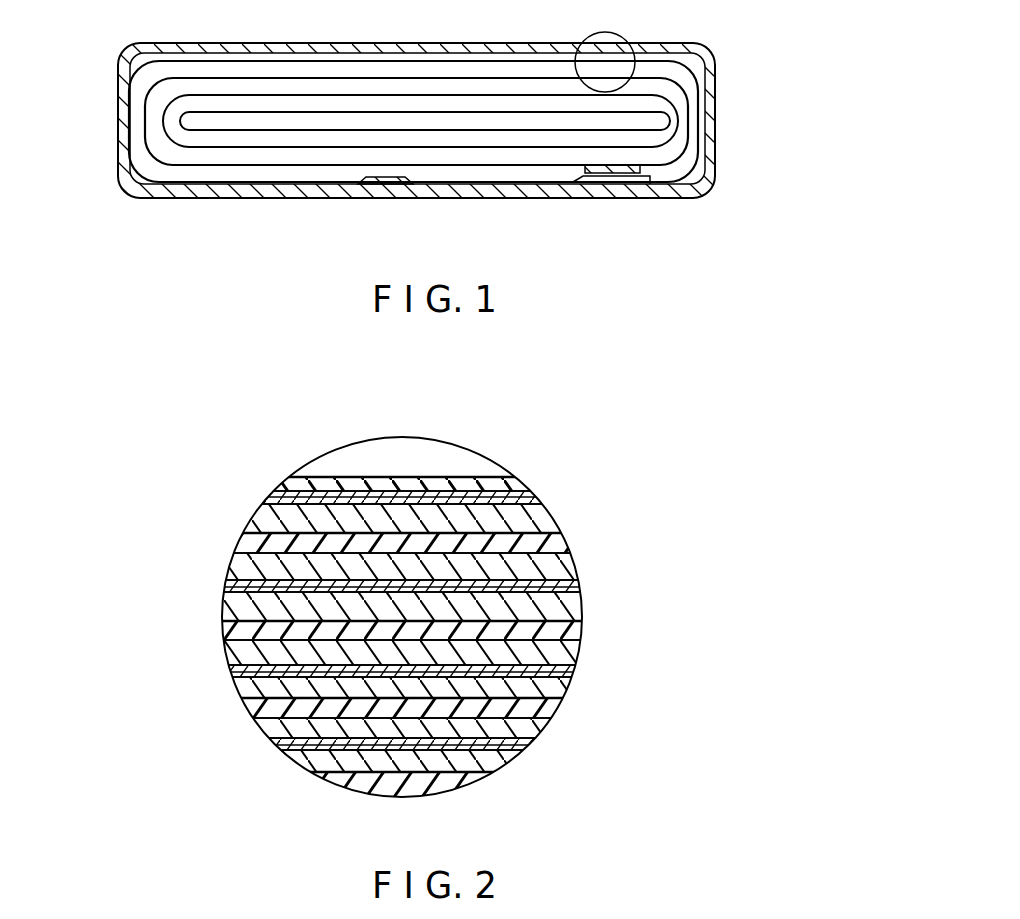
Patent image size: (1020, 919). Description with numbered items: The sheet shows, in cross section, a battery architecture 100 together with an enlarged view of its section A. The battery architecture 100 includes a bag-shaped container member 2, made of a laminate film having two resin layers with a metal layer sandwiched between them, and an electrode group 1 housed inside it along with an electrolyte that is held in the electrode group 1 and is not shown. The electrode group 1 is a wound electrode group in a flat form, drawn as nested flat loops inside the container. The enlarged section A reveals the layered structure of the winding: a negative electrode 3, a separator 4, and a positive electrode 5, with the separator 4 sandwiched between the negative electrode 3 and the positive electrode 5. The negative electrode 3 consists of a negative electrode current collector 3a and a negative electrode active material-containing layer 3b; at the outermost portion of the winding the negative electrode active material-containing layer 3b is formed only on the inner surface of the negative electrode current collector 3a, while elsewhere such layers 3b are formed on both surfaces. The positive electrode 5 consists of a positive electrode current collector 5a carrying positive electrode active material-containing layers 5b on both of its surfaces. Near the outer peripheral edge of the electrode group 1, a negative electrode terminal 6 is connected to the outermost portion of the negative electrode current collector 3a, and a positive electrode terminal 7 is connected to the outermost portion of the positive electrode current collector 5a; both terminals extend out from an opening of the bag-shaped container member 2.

In FIG. 1, the battery architecture 100 is at (433, 143).
In FIG. 1, the electrode group 1 is at (252, 58).
In FIG. 1, the bag-shaped container member 2 is at (431, 48).
In FIG. 2, the bag-shaped container member 2 is at (515, 480).
In FIG. 2, the negative electrode 3 is at (455, 593).
In FIG. 2, the negative electrode current collector 3a is at (535, 498).
In FIG. 2, the negative electrode active material-containing layer 3b is at (438, 611).
In FIG. 2, the separator 4 is at (262, 541).
In FIG. 2, the positive electrode 5 is at (455, 682).
In FIG. 2, the positive electrode current collector 5a is at (558, 587).
In FIG. 2, the positive electrode active material-containing layer 5b is at (558, 563).
In FIG. 1, the negative electrode terminal 6 is at (392, 185).
In FIG. 1, the positive electrode terminal 7 is at (617, 176).
In FIG. 1, the section A is at (601, 32).
In FIG. 2, the section A is at (316, 468).